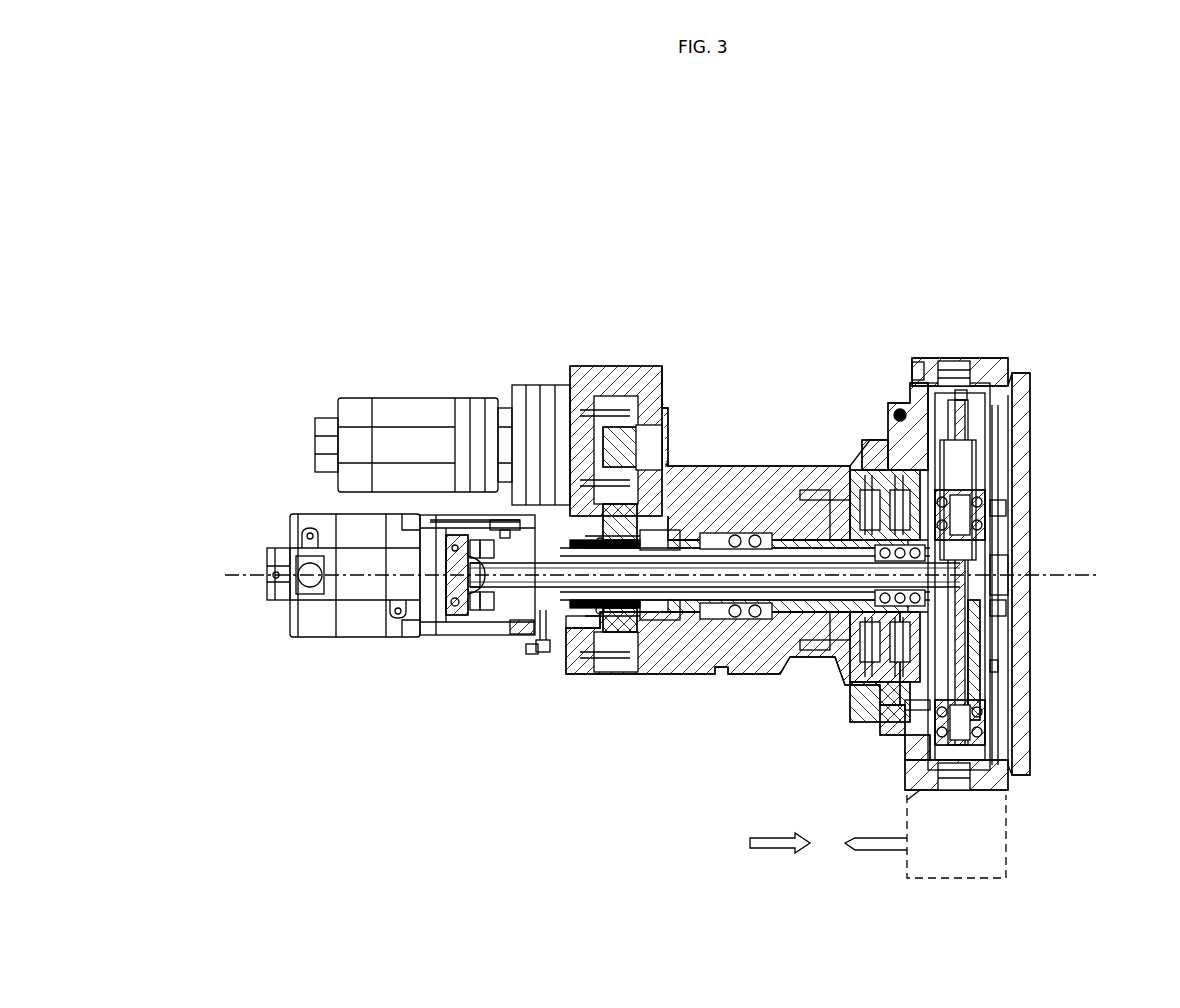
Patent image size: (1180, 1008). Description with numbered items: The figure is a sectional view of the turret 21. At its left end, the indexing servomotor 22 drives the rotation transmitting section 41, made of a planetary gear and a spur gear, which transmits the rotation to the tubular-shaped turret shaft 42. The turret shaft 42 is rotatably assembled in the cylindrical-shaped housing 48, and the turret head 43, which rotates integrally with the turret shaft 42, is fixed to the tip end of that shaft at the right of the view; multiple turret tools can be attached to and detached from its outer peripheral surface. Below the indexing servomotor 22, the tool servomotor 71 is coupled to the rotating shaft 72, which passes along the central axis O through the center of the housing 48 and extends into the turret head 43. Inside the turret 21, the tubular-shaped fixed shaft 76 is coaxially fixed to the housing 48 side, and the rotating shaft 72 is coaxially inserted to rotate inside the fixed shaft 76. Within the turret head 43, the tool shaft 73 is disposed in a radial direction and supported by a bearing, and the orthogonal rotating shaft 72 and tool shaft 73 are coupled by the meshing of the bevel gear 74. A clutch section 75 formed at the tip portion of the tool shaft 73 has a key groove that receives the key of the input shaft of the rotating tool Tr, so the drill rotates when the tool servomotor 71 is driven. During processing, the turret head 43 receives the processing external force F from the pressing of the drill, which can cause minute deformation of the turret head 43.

The turret 21 is at (772, 342).
The indexing servomotor 22 is at (412, 412).
The rotation transmitting section 41 is at (556, 380).
The turret shaft 42 is at (680, 520).
The turret head 43 is at (998, 373).
The housing 48 is at (786, 502).
The tool servomotor 71 is at (356, 622).
The rotating shaft 72 is at (772, 622).
The tool shaft 73 is at (960, 672).
The bevel gear 74 is at (1000, 540).
The clutch section 75 is at (985, 750).
The fixed shaft 76 is at (530, 616).
The axis O is at (1080, 575).
The rotating tool Tr is at (982, 852).
The processing external force F is at (760, 844).